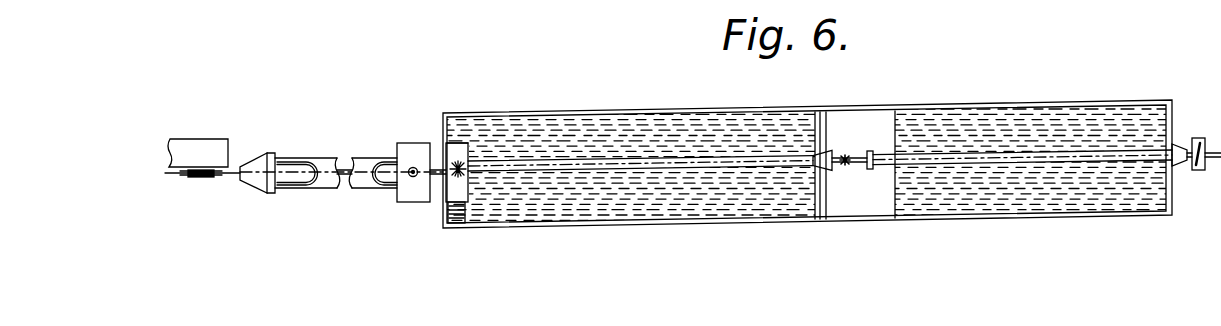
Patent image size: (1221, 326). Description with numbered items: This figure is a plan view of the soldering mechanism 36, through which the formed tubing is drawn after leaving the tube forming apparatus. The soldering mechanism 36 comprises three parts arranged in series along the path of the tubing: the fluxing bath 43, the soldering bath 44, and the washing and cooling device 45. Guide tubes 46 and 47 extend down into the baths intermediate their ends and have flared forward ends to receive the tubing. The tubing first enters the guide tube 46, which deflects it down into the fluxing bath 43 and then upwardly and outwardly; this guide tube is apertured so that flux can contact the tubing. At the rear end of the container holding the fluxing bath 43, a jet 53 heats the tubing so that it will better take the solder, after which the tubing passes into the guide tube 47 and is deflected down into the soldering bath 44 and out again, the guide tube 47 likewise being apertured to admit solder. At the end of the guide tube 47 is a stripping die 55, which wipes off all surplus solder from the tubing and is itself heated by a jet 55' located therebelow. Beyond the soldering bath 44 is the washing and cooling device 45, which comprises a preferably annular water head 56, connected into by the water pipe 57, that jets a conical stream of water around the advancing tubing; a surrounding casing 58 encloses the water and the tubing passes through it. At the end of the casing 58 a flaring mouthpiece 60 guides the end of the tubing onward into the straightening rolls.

The soldering mechanism 36 is at (938, 223).
The fluxing bath 43 is at (1062, 203).
The soldering bath 44 is at (733, 205).
The washing and cooling device 45 is at (312, 190).
The guide tube 46 is at (1025, 162).
The guide tube 47 is at (535, 174).
The jet 53 is at (845, 166).
The stripping die 55 is at (459, 211).
The jet 55' is at (472, 115).
The water head 56 is at (428, 202).
The water pipe 57 is at (412, 176).
The casing 58 is at (362, 182).
The flaring mouthpiece 60 is at (255, 191).